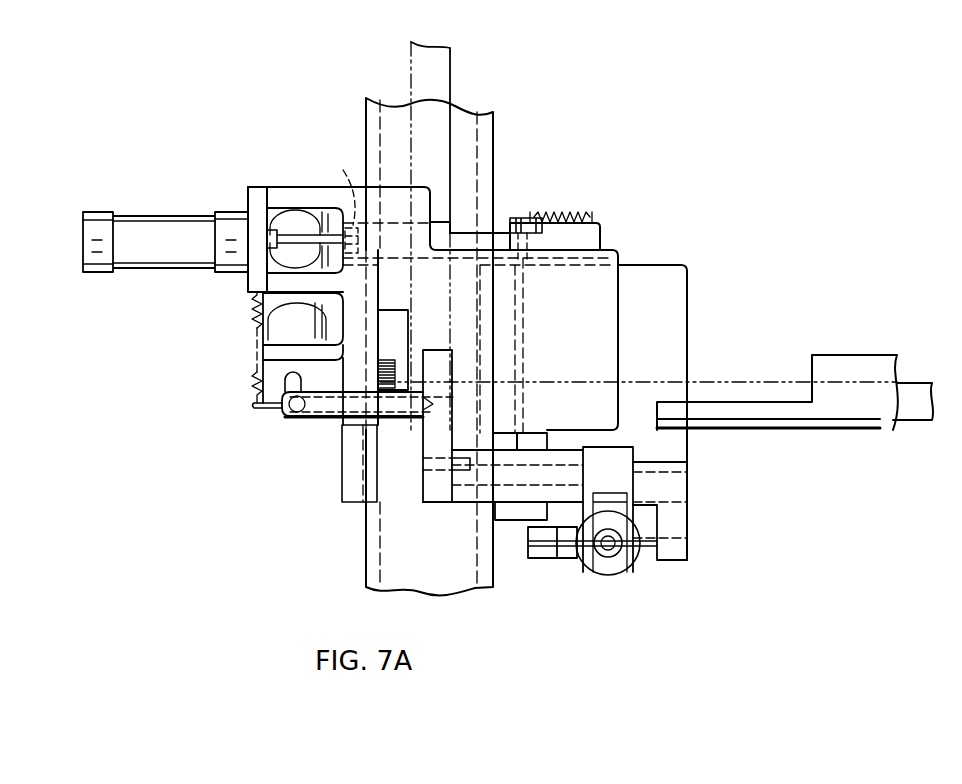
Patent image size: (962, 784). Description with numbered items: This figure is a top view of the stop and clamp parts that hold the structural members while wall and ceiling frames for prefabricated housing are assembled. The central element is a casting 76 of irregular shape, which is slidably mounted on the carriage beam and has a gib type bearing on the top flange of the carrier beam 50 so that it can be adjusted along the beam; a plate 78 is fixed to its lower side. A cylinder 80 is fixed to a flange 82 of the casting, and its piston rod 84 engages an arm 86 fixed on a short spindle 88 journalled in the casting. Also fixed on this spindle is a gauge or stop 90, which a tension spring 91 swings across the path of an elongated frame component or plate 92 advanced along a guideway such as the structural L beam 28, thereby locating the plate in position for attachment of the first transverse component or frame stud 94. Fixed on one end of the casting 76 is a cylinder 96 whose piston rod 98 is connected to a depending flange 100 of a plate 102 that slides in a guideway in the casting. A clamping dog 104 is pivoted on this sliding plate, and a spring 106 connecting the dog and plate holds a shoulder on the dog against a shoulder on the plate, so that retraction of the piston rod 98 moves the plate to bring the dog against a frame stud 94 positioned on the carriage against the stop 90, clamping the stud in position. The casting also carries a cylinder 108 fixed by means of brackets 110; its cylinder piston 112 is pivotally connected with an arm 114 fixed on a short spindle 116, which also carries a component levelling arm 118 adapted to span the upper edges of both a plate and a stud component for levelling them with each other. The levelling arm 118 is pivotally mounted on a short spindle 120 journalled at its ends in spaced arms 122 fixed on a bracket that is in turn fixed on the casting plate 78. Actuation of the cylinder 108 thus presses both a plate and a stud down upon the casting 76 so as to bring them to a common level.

The guideway 28 is at (810, 432).
The carrier beam 50 is at (487, 145).
The casting 76 is at (277, 188).
The plate 78 is at (688, 330).
The cylinder 80 is at (262, 295).
The flange 82 is at (268, 362).
The piston rod 84 is at (288, 380).
The arm 86 is at (322, 425).
The short spindle 88 is at (285, 405).
The stop 90 is at (403, 356).
The tension spring 91 is at (250, 326).
The plate 92 is at (770, 382).
The frame stud 94 is at (452, 62).
The cylinder 96 is at (130, 272).
The piston rod 98 is at (300, 240).
The depending flange 100 is at (352, 202).
The plate 102 is at (440, 222).
The clamping dog 104 is at (510, 228).
The spring 106 is at (560, 218).
The cylinder 108 is at (600, 578).
The brackets 110 is at (552, 560).
The cylinder piston 112 is at (612, 560).
The arm 114 is at (625, 460).
The short spindle 116 is at (460, 500).
The component levelling arm 118 is at (433, 360).
The short spindle 120 is at (528, 440).
The spaced arms 122 is at (545, 445).